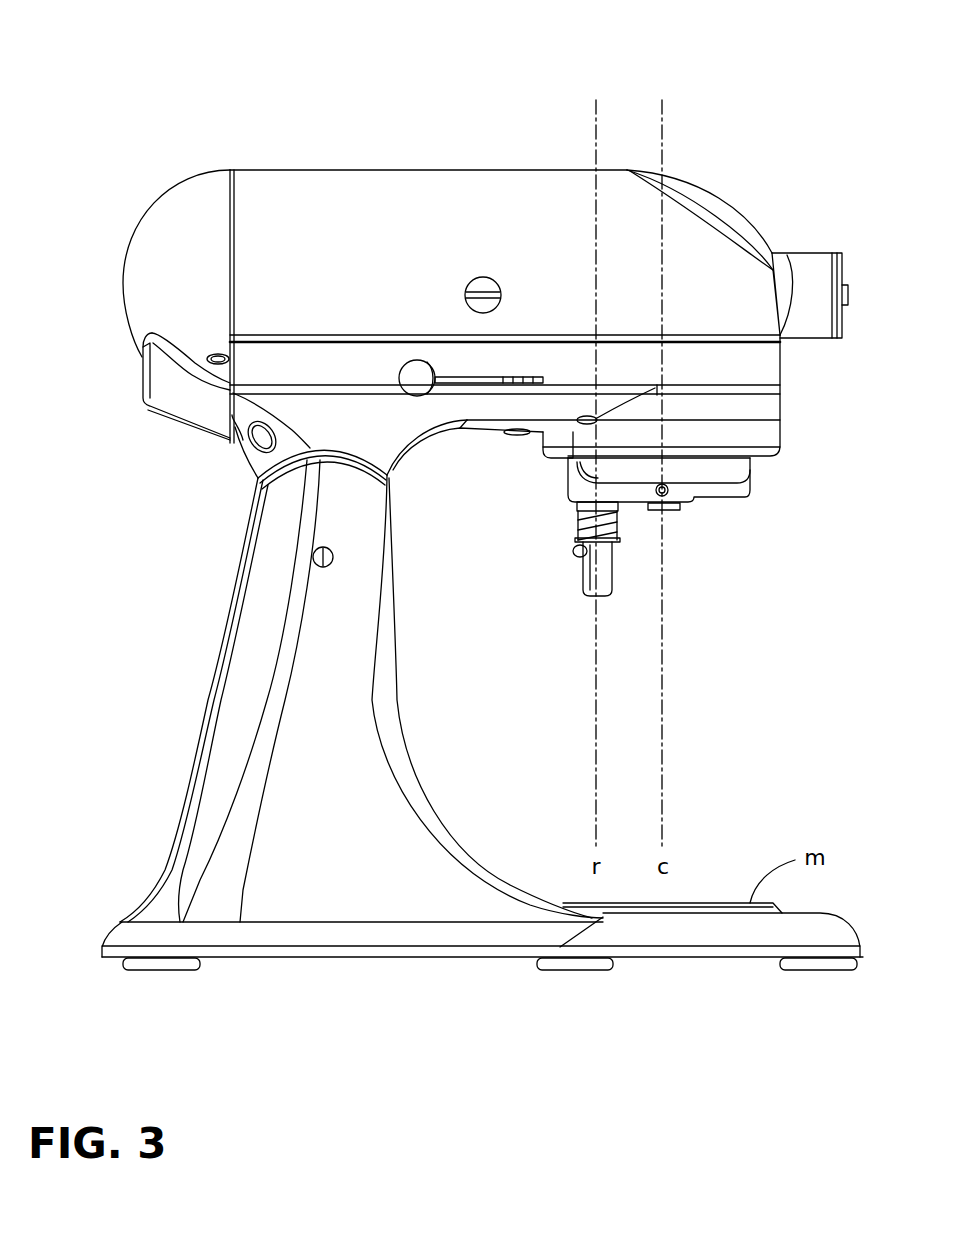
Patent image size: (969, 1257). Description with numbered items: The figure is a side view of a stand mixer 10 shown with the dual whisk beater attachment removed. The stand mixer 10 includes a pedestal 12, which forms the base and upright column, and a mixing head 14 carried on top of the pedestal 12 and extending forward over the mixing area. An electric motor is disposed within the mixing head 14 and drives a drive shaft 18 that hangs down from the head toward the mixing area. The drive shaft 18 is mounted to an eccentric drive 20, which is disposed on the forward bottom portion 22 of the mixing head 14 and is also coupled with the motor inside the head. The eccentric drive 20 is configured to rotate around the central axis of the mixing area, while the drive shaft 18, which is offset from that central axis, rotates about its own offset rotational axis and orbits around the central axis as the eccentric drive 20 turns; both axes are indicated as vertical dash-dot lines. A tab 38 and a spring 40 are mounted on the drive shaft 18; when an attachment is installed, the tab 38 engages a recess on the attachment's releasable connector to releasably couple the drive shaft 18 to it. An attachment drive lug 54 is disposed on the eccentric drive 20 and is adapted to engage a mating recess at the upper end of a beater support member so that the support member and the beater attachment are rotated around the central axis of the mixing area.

The stand mixer 10 is at (224, 76).
The pedestal 12 is at (255, 633).
The mixing head 14 is at (457, 193).
The drive shaft 18 is at (588, 587).
The eccentric drive 20 is at (722, 473).
The forward bottom portion 22 is at (572, 437).
The tab 38 is at (575, 553).
The spring 40 is at (615, 530).
The attachment drive lug 54 is at (677, 492).